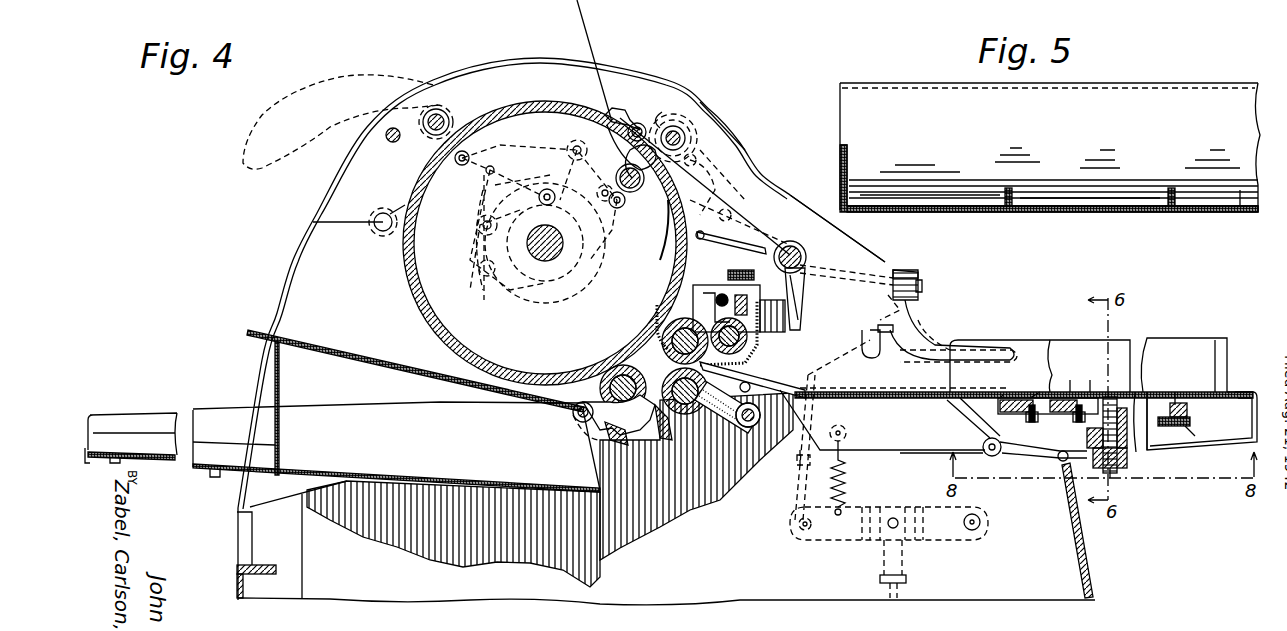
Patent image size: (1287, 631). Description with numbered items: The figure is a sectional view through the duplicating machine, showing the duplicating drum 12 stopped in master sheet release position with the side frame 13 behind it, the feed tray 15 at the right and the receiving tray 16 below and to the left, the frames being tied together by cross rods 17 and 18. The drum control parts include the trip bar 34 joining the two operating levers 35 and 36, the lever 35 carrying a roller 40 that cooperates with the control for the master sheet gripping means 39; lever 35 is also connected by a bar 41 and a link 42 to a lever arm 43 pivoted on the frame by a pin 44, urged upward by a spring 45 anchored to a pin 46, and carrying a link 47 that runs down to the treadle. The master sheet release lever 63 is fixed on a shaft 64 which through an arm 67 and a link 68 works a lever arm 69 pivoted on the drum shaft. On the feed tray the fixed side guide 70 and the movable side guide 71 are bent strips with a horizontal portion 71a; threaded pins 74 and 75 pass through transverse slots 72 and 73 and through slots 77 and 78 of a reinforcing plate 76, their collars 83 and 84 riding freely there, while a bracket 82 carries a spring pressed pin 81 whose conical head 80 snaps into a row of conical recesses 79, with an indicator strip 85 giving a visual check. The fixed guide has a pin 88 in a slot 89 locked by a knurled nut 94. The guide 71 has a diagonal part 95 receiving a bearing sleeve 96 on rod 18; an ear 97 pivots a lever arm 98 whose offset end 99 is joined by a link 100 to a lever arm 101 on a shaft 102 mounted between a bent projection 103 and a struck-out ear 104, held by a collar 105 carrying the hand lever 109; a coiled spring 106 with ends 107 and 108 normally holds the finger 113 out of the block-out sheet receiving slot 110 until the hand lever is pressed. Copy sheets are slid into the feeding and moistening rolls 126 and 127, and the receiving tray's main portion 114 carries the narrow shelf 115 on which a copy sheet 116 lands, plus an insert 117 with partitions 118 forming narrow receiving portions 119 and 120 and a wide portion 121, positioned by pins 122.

In FIG. 4, the duplicating drum 12 is at (558, 100).
In FIG. 4, the side frame 13 is at (650, 78).
In FIG. 4, the feed tray 15 is at (1245, 392).
In FIG. 4, the receiving tray 16 is at (237, 410).
In FIG. 5, the receiving tray 16 is at (1053, 220).
In FIG. 4, the cross rod 17 is at (386, 135).
In FIG. 4, the cross tie rod 18 is at (690, 140).
In FIG. 4, the trip bar 34 is at (805, 282).
In FIG. 4, the operating lever 35 is at (638, 188).
In FIG. 4, the operating lever 36 is at (792, 242).
In FIG. 4, the master sheet gripping means 39 is at (609, 113).
In FIG. 4, the roller 40 is at (608, 200).
In FIG. 4, the bar 41 is at (724, 205).
In FIG. 4, the link 42 is at (786, 318).
In FIG. 4, the lever arm 43 is at (935, 540).
In FIG. 4, the pin 44 is at (982, 530).
In FIG. 4, the spring 45 is at (846, 478).
In FIG. 4, the pin 46 is at (846, 435).
In FIG. 4, the link 47 is at (906, 587).
In FIG. 4, the lever 63 is at (343, 83).
In FIG. 4, the shaft 64 is at (444, 114).
In FIG. 4, the arm 67 is at (470, 156).
In FIG. 4, the link 68 is at (484, 184).
In FIG. 4, the lever arm 69 is at (565, 144).
In FIG. 4, the fixed side guide 70 is at (1190, 340).
In FIG. 4, the movable side guide 71 is at (1025, 340).
In FIG. 4, the horizontal portion 71a is at (1213, 390).
In FIG. 4, the slot 72 is at (1040, 397).
In FIG. 4, the slot 73 is at (1070, 391).
In FIG. 4, the threaded pin 74 is at (1032, 395).
In FIG. 4, the threaded pin 75 is at (1090, 391).
In FIG. 4, the plate 76 is at (1002, 395).
In FIG. 4, the slot 77 is at (1033, 422).
In FIG. 4, the slot 78 is at (1078, 422).
In FIG. 4, the conical recess 79 is at (1130, 392).
In FIG. 4, the conical head 80 is at (1128, 420).
In FIG. 4, the spring pressed pin 81 is at (1114, 472).
In FIG. 4, the bracket 82 is at (1128, 462).
In FIG. 4, the collar 83 is at (1040, 425).
In FIG. 4, the collar 84 is at (1110, 396).
In FIG. 4, the visual indicator strip 85 is at (1225, 390).
In FIG. 4, the pin 88 is at (1191, 415).
In FIG. 4, the slot 89 is at (1176, 391).
In FIG. 4, the knurled nut 94 is at (1187, 426).
In FIG. 4, the upwardly and diagonally extending part 95 is at (800, 232).
In FIG. 4, the bearing sleeve 96 is at (686, 122).
In FIG. 4, the ear 97 is at (728, 138).
In FIG. 4, the lever arm 98 is at (716, 188).
In FIG. 4, the offset end 99 is at (680, 226).
In FIG. 4, the link 100 is at (726, 238).
In FIG. 4, the lever arm 101 is at (905, 272).
In FIG. 4, the shaft 102 is at (870, 348).
In FIG. 4, the projection 103 is at (920, 278).
In FIG. 4, the ear 104 is at (878, 336).
In FIG. 4, the collar 105 is at (886, 306).
In FIG. 4, the spring 106 is at (886, 290).
In FIG. 4, the spring end 107 is at (926, 320).
In FIG. 4, the spring end 108 is at (924, 288).
In FIG. 4, the hand lever 109 is at (966, 362).
In FIG. 4, the block-out sheet receiving slot 110 is at (638, 123).
In FIG. 4, the finger 113 is at (661, 128).
In FIG. 4, the main tray portion 114 is at (445, 492).
In FIG. 5, the main tray portion 114 is at (1076, 212).
In FIG. 4, the shelf 115 is at (362, 368).
In FIG. 5, the shelf 115 is at (1145, 88).
In FIG. 4, the copy sheet 116 is at (350, 357).
In FIG. 4, the insert 117 is at (135, 430).
In FIG. 5, the insert 117 is at (1063, 203).
In FIG. 4, the partition 118 is at (160, 425).
In FIG. 5, the partition 118 is at (1002, 190).
In FIG. 5, the narrow receiving portion 119 is at (945, 195).
In FIG. 5, the narrow receiving portion 120 is at (1125, 200).
In FIG. 5, the wide receiving portion 121 is at (1240, 195).
In FIG. 4, the pin 122 is at (120, 462).
In FIG. 4, the feeding and moistening roll 126 is at (668, 330).
In FIG. 4, the feeding and moistening roll 127 is at (706, 422).